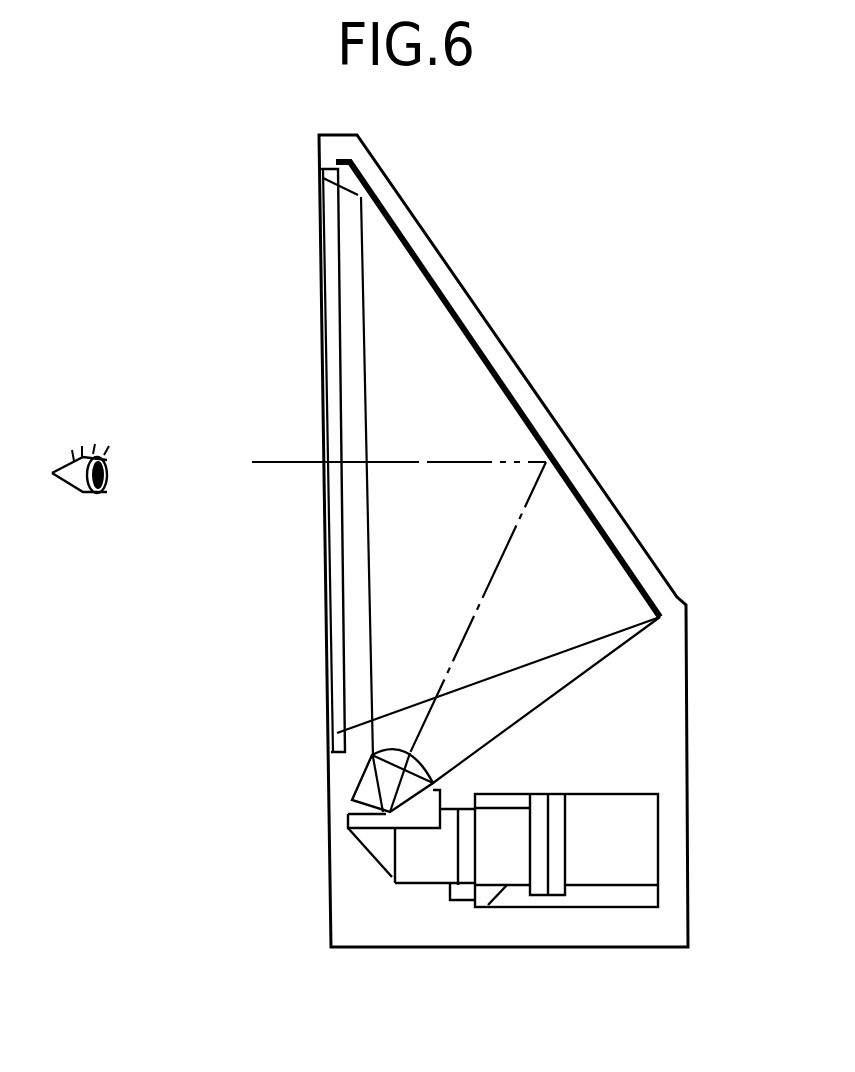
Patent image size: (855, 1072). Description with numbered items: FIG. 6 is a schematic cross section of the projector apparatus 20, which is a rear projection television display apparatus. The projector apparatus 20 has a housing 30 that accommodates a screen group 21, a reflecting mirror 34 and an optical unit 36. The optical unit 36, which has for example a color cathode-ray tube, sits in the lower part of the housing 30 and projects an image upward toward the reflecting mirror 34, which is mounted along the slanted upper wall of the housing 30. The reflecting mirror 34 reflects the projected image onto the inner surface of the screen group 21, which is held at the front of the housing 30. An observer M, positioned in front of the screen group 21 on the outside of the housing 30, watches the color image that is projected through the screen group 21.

The projector apparatus 20 is at (493, 253).
The screen group 21 is at (311, 655).
The housing 30 is at (687, 727).
The reflecting mirror 34 is at (511, 362).
The optical unit 36 is at (622, 837).
The observer M is at (80, 498).